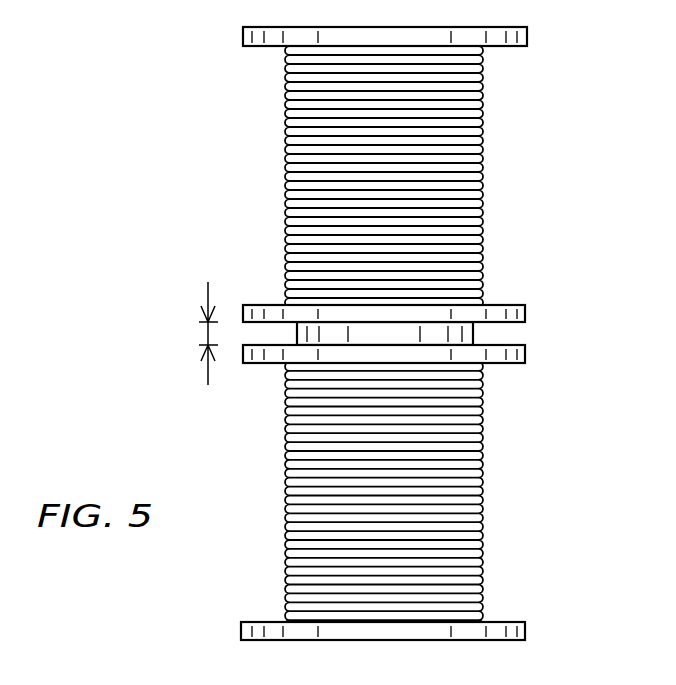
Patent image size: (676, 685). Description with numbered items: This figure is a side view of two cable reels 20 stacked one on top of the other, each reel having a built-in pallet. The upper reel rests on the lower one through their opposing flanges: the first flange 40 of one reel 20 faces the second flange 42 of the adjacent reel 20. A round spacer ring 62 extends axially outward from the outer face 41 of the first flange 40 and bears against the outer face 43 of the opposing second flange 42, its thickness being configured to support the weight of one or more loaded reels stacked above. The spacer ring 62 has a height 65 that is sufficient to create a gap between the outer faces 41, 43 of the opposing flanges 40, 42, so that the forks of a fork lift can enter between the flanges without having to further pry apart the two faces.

The cable reel 20 is at (226, 90).
The second flange 42 is at (508, 307).
The outer face of the second flange 43 is at (503, 322).
The outer face of the first flange 41 is at (503, 346).
The first flange 40 is at (412, 330).
The spacer ring 62 is at (296, 331).
The height 65 is at (202, 333).